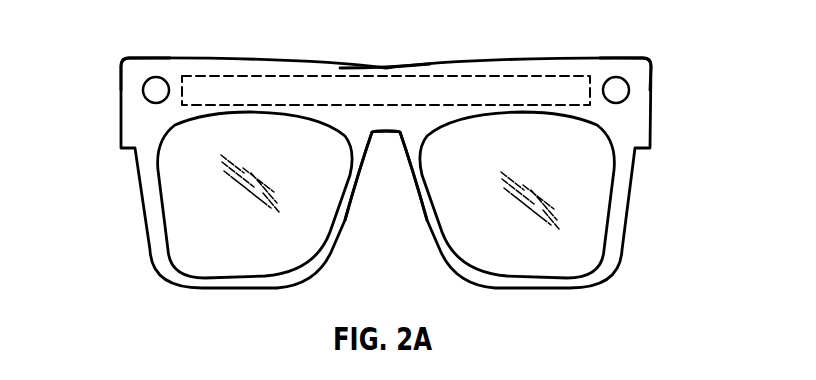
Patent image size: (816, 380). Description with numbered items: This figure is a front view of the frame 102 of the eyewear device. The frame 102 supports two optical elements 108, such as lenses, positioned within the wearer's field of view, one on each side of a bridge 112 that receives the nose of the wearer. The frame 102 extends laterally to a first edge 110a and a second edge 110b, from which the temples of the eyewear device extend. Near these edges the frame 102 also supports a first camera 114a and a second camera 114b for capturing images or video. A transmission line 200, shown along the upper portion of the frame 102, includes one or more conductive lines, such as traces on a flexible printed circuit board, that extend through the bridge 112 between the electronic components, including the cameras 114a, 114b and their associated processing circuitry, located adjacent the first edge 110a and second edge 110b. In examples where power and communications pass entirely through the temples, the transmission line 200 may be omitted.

The frame 102 is at (272, 60).
The optical elements 108 is at (180, 200).
The first edge 110a is at (137, 58).
The second edge 110b is at (645, 58).
The bridge 112 is at (395, 68).
The first camera 114a is at (152, 88).
The second camera 114b is at (617, 90).
The transmission line 200 is at (518, 75).